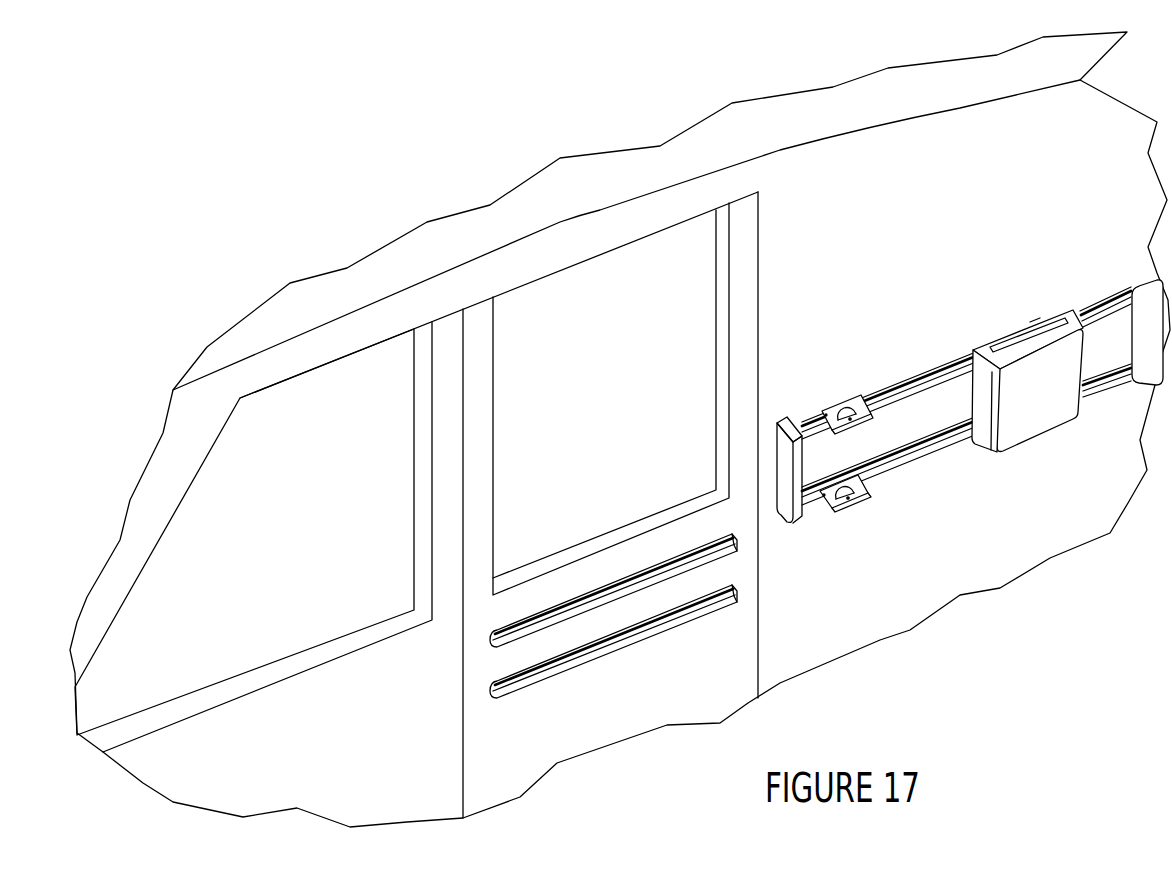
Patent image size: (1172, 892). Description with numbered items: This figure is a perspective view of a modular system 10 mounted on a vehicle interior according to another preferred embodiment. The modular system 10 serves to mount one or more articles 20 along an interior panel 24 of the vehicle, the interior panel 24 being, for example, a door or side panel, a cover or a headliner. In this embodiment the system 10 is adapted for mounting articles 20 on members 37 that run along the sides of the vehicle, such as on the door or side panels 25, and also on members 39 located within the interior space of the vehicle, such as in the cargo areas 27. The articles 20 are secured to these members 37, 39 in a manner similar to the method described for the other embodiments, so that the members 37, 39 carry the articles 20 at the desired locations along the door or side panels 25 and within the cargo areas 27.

The modular system 10 is at (877, 61).
The articles 20 is at (1063, 310).
The interior panel 24 is at (1080, 56).
The door or side panels 25 is at (678, 693).
The cargo areas 27 is at (935, 569).
The members 37 is at (633, 582).
The members 39 is at (907, 377).